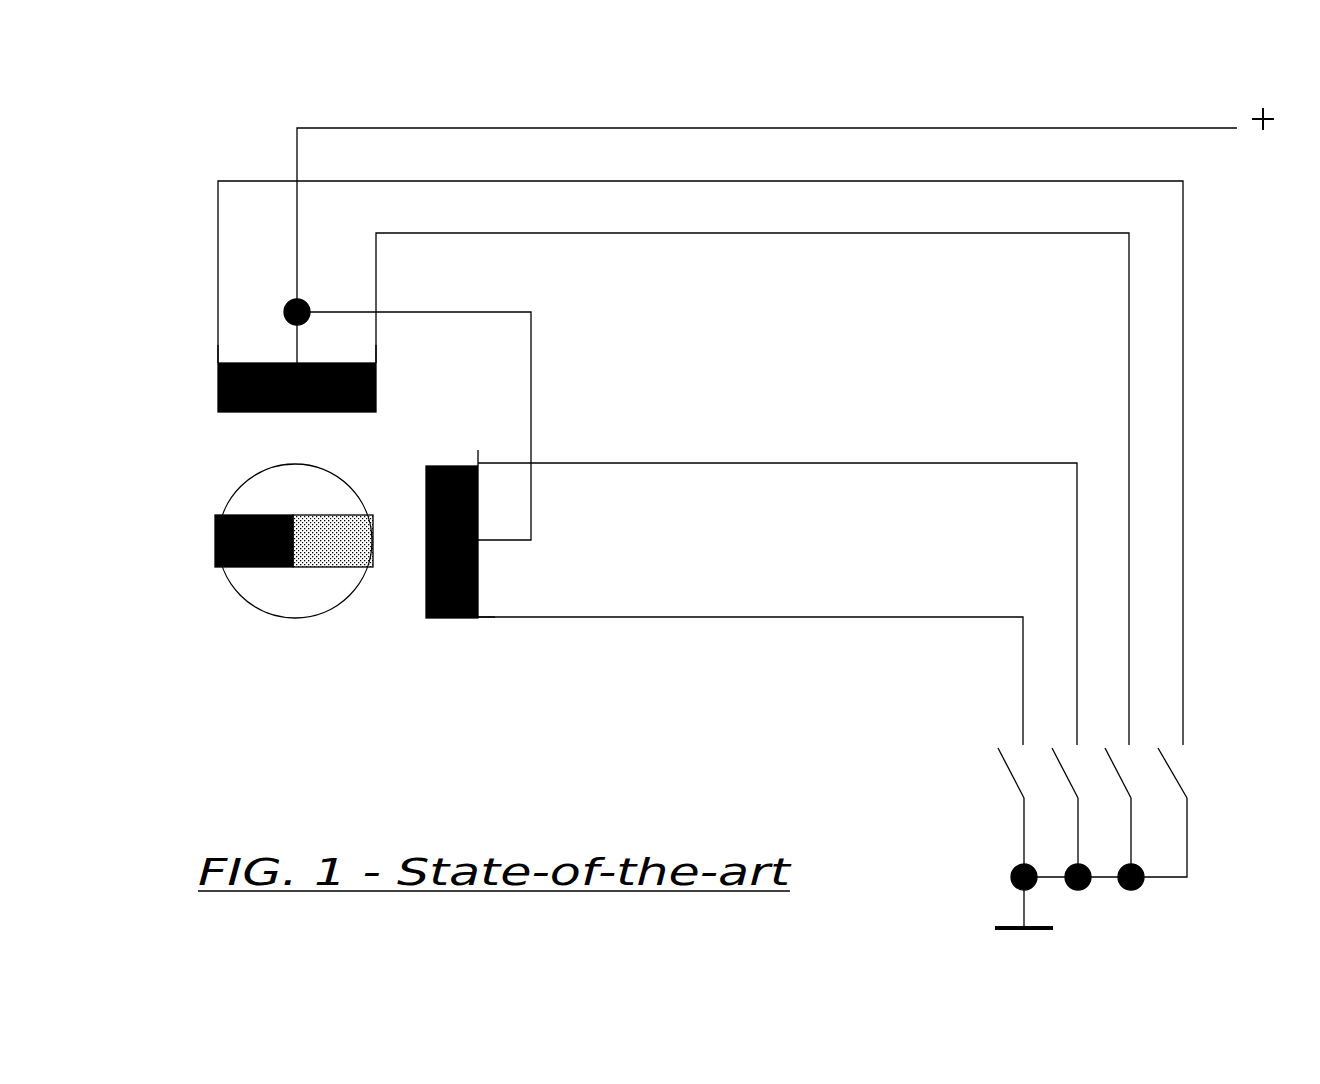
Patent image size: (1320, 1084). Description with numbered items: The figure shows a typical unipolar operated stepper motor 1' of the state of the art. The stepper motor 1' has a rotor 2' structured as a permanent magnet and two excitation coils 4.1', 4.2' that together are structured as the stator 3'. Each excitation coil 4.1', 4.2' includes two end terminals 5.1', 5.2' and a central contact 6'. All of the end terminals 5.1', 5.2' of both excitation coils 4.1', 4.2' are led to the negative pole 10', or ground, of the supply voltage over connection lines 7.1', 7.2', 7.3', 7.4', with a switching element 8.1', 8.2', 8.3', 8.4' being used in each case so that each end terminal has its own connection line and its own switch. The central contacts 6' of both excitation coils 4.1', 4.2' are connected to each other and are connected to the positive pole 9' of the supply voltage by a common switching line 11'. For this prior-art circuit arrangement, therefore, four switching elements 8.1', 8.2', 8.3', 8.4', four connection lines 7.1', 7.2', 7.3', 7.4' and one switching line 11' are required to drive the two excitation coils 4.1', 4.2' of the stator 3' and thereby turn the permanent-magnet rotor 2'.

The unipolar operated stepper motor 1' is at (334, 537).
The rotor 2' is at (294, 584).
The stator 3' is at (249, 448).
The excitation coil 4.1' is at (249, 387).
The excitation coil 4.2' is at (441, 582).
The end terminal 5.1' is at (329, 385).
The end terminal 5.2' is at (461, 529).
The central contact 6' is at (434, 425).
The connection line 7.1' is at (700, 463).
The connection line 7.2' is at (752, 489).
The connection line 7.3' is at (777, 553).
The connection line 7.4' is at (750, 633).
The switching element 8.1' is at (1213, 794).
The switching element 8.2' is at (1198, 819).
The switching element 8.3' is at (1079, 775).
The switching element 8.4' is at (989, 819).
The positive pole 9' is at (1248, 105).
The negative pole 10' is at (1052, 918).
The switching line 11' is at (767, 222).